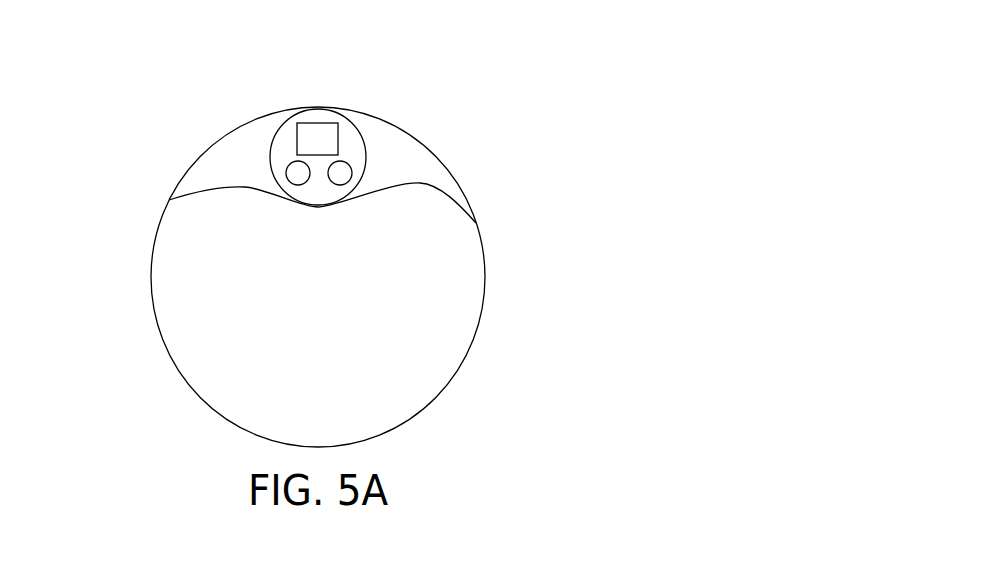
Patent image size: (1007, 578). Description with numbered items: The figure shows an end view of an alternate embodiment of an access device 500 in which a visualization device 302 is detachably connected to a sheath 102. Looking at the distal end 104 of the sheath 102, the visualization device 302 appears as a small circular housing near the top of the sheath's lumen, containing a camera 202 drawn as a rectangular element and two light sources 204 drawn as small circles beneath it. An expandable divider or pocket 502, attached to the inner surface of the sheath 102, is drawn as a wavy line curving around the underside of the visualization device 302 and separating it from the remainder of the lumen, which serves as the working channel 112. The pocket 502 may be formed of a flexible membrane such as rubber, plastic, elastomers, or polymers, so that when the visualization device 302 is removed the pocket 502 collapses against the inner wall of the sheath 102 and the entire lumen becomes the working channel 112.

The access device 500 is at (588, 56).
The sheath 102 is at (166, 155).
The distal end 104 is at (475, 222).
The working channel 112 is at (459, 281).
The camera 202 is at (338, 140).
The light sources 204 is at (352, 173).
The visualization device 302 is at (287, 128).
The pocket 502 is at (438, 185).